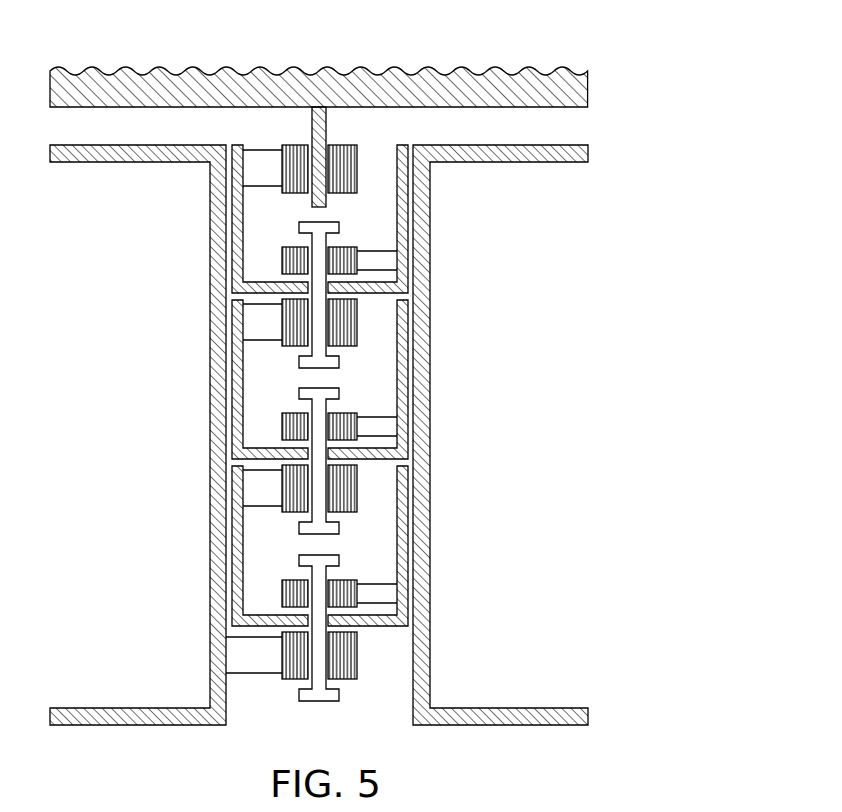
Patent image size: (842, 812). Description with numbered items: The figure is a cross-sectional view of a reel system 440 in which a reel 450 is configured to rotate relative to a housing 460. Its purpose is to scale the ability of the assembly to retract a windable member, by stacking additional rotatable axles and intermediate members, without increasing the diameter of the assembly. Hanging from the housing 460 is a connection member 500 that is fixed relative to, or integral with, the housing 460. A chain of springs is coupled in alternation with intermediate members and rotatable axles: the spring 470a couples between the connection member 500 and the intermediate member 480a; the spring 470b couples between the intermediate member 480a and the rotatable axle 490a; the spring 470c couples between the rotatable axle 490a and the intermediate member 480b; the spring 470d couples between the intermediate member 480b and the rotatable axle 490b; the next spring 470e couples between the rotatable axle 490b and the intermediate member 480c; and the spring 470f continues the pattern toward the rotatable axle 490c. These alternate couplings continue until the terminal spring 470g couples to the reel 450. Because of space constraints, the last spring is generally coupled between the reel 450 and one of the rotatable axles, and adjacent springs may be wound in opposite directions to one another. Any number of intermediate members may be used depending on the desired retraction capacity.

The reel system 440 is at (618, 58).
The reel 450 is at (427, 545).
The housing 460 is at (257, 82).
The spring 470a is at (352, 166).
The spring 470b is at (350, 257).
The spring 470c is at (352, 322).
The spring 470d is at (352, 428).
The spring 470e is at (352, 490).
The spring 470f is at (352, 596).
The spring 470g is at (355, 658).
The intermediate member 480a is at (235, 210).
The intermediate member 480b is at (236, 375).
The intermediate member 480c is at (236, 563).
The rotatable axle 490a is at (322, 362).
The rotatable axle 490b is at (324, 530).
The rotatable axle 490c is at (318, 700).
The connection member 500 is at (316, 148).